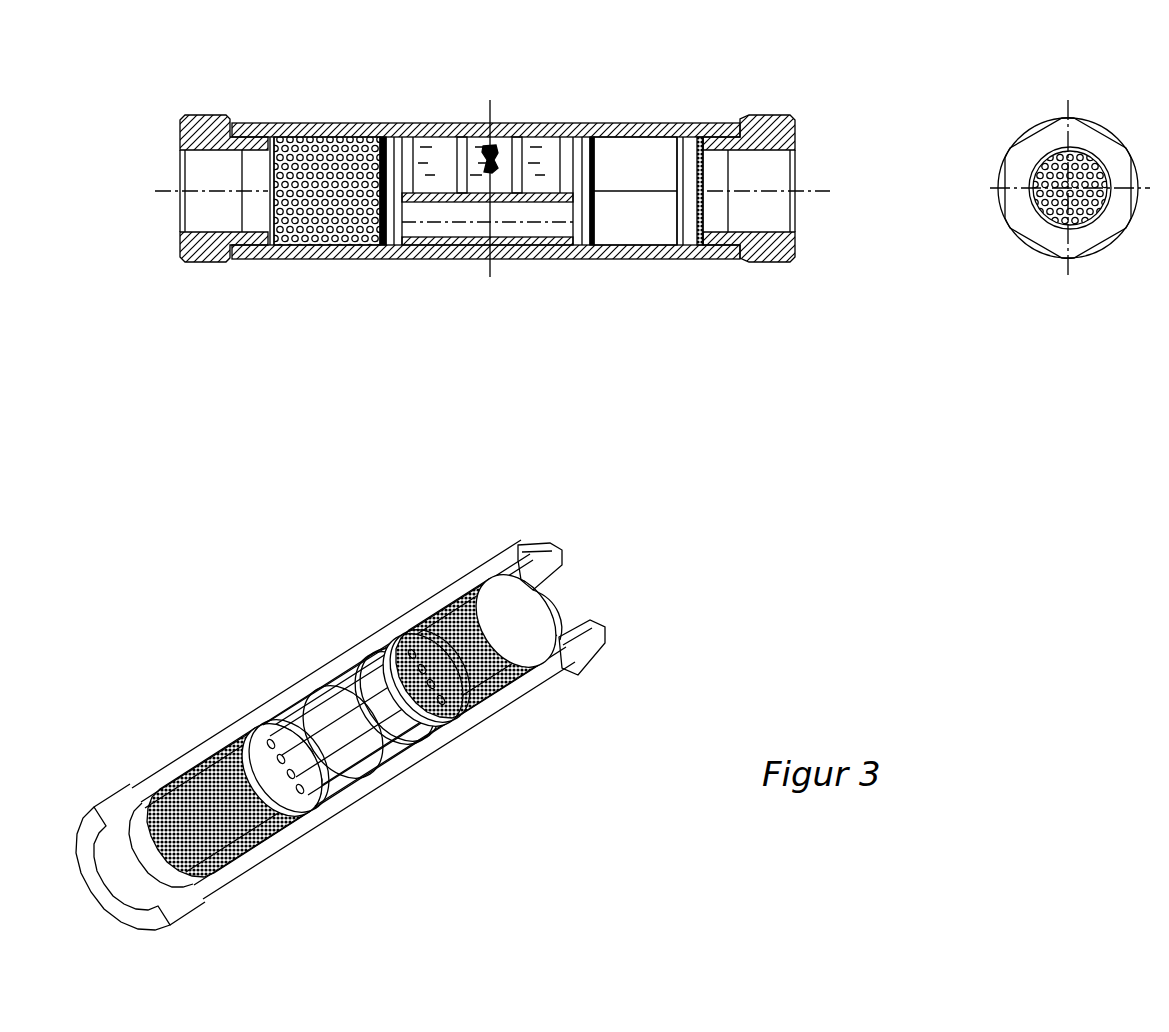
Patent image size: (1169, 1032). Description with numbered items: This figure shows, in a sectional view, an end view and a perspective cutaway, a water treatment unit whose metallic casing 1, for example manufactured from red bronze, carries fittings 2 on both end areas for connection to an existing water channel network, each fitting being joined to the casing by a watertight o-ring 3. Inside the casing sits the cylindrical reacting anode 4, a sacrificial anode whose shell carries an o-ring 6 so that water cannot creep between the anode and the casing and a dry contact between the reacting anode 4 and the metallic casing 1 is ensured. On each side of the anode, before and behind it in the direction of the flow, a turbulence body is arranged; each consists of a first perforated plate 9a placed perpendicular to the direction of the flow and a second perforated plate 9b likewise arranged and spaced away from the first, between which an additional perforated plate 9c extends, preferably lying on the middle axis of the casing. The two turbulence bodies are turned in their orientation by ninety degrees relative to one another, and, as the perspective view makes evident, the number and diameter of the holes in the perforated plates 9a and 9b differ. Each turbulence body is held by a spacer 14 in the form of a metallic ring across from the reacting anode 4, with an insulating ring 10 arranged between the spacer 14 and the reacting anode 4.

The metallic casing 1 is at (658, 122).
The fittings 2 is at (183, 263).
The o-ring 3 is at (258, 258).
The reacting anode 4 is at (543, 250).
The o-ring 6 is at (518, 243).
The first perforated plate 9a is at (268, 175).
The second perforated plate 9b is at (396, 137).
The additional perforated plate 9c is at (330, 220).
The insulating ring 10 is at (402, 250).
The spacer 14 is at (392, 252).